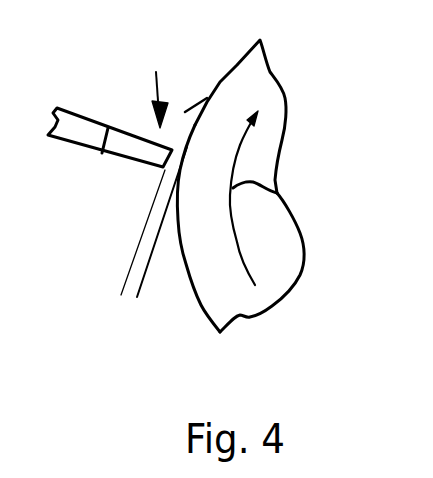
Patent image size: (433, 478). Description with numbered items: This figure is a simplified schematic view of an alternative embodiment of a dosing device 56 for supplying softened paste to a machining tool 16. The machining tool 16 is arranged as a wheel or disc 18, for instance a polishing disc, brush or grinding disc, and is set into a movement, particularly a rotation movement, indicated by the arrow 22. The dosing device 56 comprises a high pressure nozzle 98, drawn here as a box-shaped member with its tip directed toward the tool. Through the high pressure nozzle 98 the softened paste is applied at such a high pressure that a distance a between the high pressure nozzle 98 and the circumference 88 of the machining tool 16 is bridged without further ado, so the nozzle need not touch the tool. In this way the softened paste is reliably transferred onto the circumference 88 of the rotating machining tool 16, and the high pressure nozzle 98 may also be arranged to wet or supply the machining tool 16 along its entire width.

The high pressure nozzle 98 is at (122, 145).
The dosing device 56 is at (165, 72).
The circumference 88 is at (199, 101).
The wheel or disc 18 is at (252, 87).
The arrow 22 is at (278, 194).
The machining tool 16 is at (189, 345).
The distance a is at (183, 292).